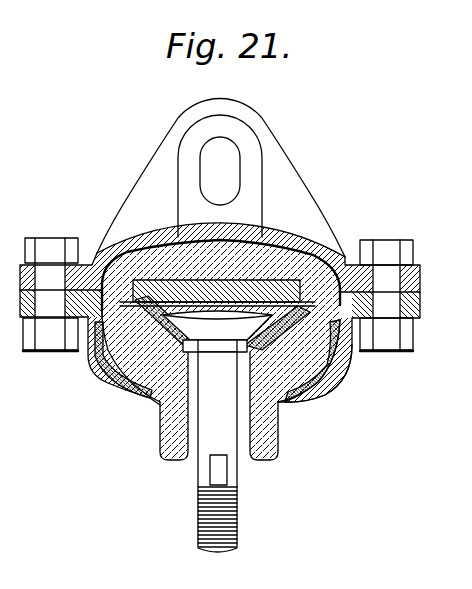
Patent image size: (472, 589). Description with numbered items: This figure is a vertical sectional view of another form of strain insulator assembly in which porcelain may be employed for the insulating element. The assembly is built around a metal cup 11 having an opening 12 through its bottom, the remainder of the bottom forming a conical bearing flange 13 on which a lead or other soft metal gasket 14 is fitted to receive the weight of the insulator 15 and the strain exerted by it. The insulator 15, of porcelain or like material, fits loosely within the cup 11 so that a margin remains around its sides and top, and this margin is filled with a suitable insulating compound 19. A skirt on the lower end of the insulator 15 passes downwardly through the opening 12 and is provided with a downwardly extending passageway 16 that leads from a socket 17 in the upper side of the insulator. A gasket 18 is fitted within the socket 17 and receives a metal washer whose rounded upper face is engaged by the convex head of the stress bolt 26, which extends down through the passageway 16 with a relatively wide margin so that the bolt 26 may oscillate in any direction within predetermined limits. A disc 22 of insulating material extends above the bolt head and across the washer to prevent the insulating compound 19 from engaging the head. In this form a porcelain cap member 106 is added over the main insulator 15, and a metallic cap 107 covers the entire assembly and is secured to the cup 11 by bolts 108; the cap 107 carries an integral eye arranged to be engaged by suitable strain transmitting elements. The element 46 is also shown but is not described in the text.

The metallic cap 107 is at (295, 240).
The porcelain cap member 106 is at (165, 258).
The bolts 108 is at (48, 268).
The metal cup 11 is at (87, 347).
The opening 12 is at (156, 401).
The conical bearing flange 13 is at (304, 400).
The soft metal gasket 14 is at (325, 386).
The insulator 15 is at (338, 372).
The opening or passageway 16 is at (160, 437).
The socket 17 is at (113, 387).
The gasket 18 is at (97, 362).
The insulating compound 19 is at (194, 262).
The disc 22 is at (232, 262).
The stress bolt 26 is at (207, 437).
The slot 46 is at (212, 473).